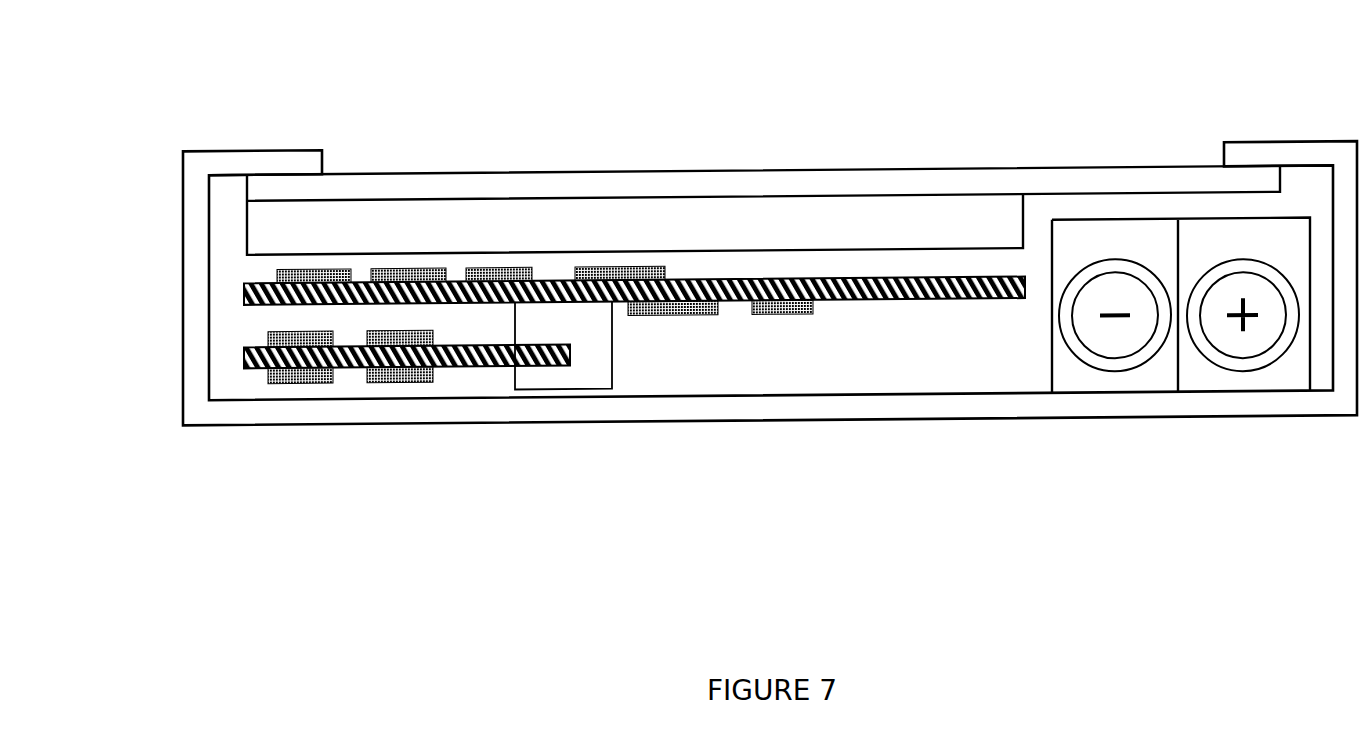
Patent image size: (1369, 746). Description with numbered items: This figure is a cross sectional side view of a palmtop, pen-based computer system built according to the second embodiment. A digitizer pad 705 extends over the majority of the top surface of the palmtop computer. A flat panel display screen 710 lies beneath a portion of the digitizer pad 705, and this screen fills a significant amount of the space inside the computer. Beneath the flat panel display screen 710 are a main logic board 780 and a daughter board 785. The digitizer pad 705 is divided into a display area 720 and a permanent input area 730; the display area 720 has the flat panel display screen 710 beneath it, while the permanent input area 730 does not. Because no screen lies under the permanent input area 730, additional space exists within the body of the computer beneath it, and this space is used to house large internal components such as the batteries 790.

The digitizer pad 705 is at (367, 193).
The flat panel display screen 710 is at (270, 239).
The display area 720 is at (1002, 171).
The permanent input area 730 is at (1210, 170).
The main logic board 780 is at (829, 312).
The daughter board 785 is at (453, 386).
The batteries 790 is at (1115, 365).